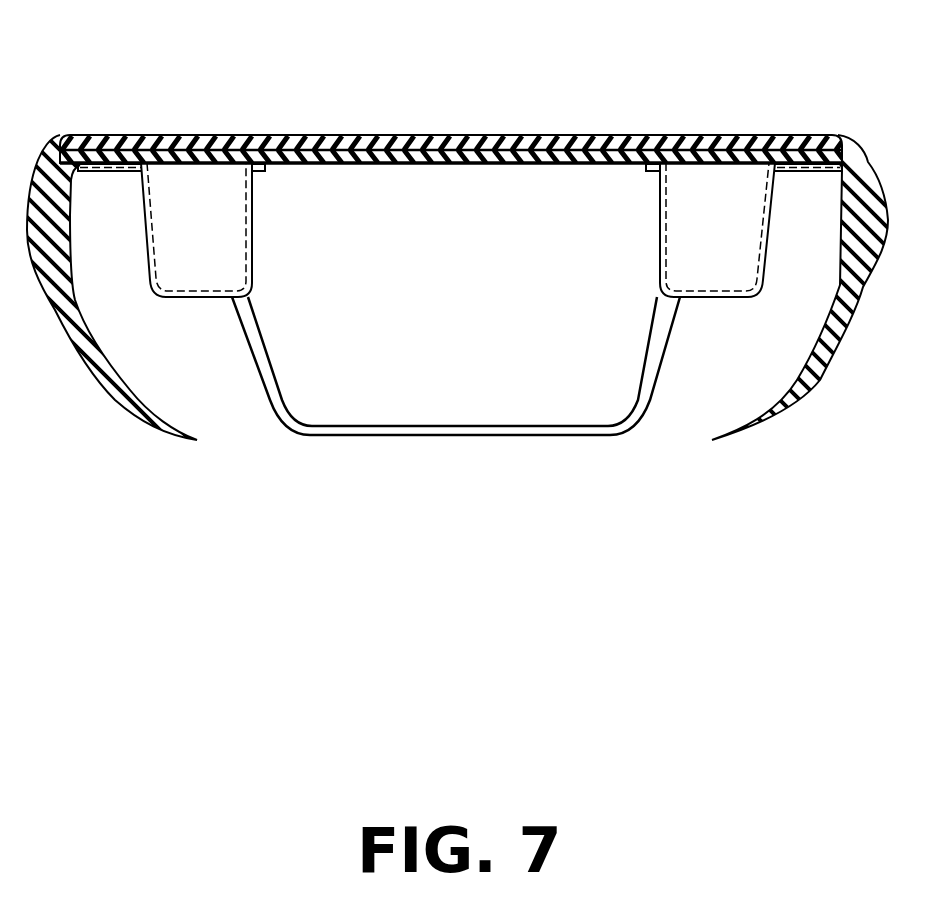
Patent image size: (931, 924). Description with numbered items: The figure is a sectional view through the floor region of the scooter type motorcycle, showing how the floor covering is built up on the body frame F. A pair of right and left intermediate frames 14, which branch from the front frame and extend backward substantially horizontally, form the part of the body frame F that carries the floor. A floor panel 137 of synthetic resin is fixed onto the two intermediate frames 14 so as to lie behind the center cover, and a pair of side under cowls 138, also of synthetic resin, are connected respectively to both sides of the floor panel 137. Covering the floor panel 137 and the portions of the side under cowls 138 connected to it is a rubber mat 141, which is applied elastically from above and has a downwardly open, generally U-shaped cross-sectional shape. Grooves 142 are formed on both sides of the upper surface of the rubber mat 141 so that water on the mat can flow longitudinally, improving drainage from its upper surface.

The intermediate frame 14 is at (202, 297).
The floor panel 137 is at (500, 167).
The side under cowl 138 is at (98, 370).
The rubber mat 141 is at (437, 136).
The groove 142 is at (247, 136).
The body frame F is at (278, 436).